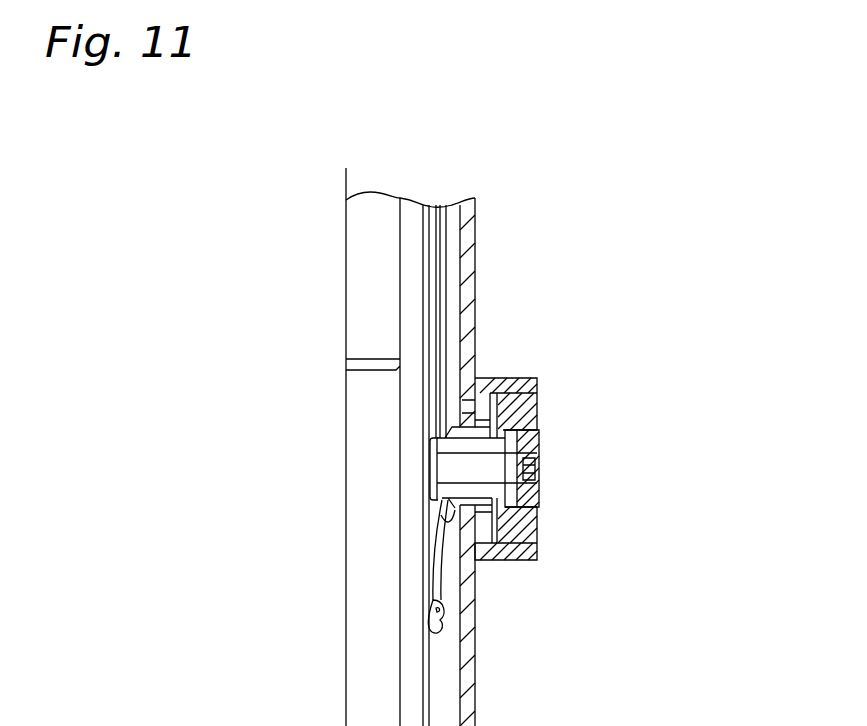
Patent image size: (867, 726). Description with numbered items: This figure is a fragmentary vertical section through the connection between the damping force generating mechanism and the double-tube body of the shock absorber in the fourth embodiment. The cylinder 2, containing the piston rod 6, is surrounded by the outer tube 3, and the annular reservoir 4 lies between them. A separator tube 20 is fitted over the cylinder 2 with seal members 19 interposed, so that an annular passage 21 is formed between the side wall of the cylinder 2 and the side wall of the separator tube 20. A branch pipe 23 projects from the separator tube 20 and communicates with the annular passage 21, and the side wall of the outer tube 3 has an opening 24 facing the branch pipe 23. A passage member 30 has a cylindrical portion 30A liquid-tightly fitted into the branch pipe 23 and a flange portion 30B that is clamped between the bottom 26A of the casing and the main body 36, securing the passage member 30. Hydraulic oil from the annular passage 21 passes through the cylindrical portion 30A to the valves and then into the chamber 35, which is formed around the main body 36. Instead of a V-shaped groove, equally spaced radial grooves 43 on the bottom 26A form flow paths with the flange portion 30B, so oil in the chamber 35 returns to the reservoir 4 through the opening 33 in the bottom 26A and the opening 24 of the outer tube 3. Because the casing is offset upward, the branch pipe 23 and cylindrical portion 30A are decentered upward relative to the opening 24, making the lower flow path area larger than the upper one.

The cylinder 2 is at (431, 207).
The outer tube 3 is at (465, 204).
The reservoir 4 is at (447, 206).
The piston rod 6 is at (360, 250).
The seal member 19 is at (446, 607).
The separator tube 20 is at (440, 207).
The annular passage 21 is at (436, 207).
The branch pipe 23 is at (452, 420).
The opening 24 is at (432, 517).
The bottom of the casing 26A is at (482, 375).
The passage member 30 is at (433, 488).
The cylindrical portion 30A is at (433, 443).
The flange portion 30B is at (535, 378).
The opening 33 is at (468, 395).
The chamber 35 is at (537, 397).
The main body 36 is at (535, 518).
The radial grooves 43 is at (502, 378).